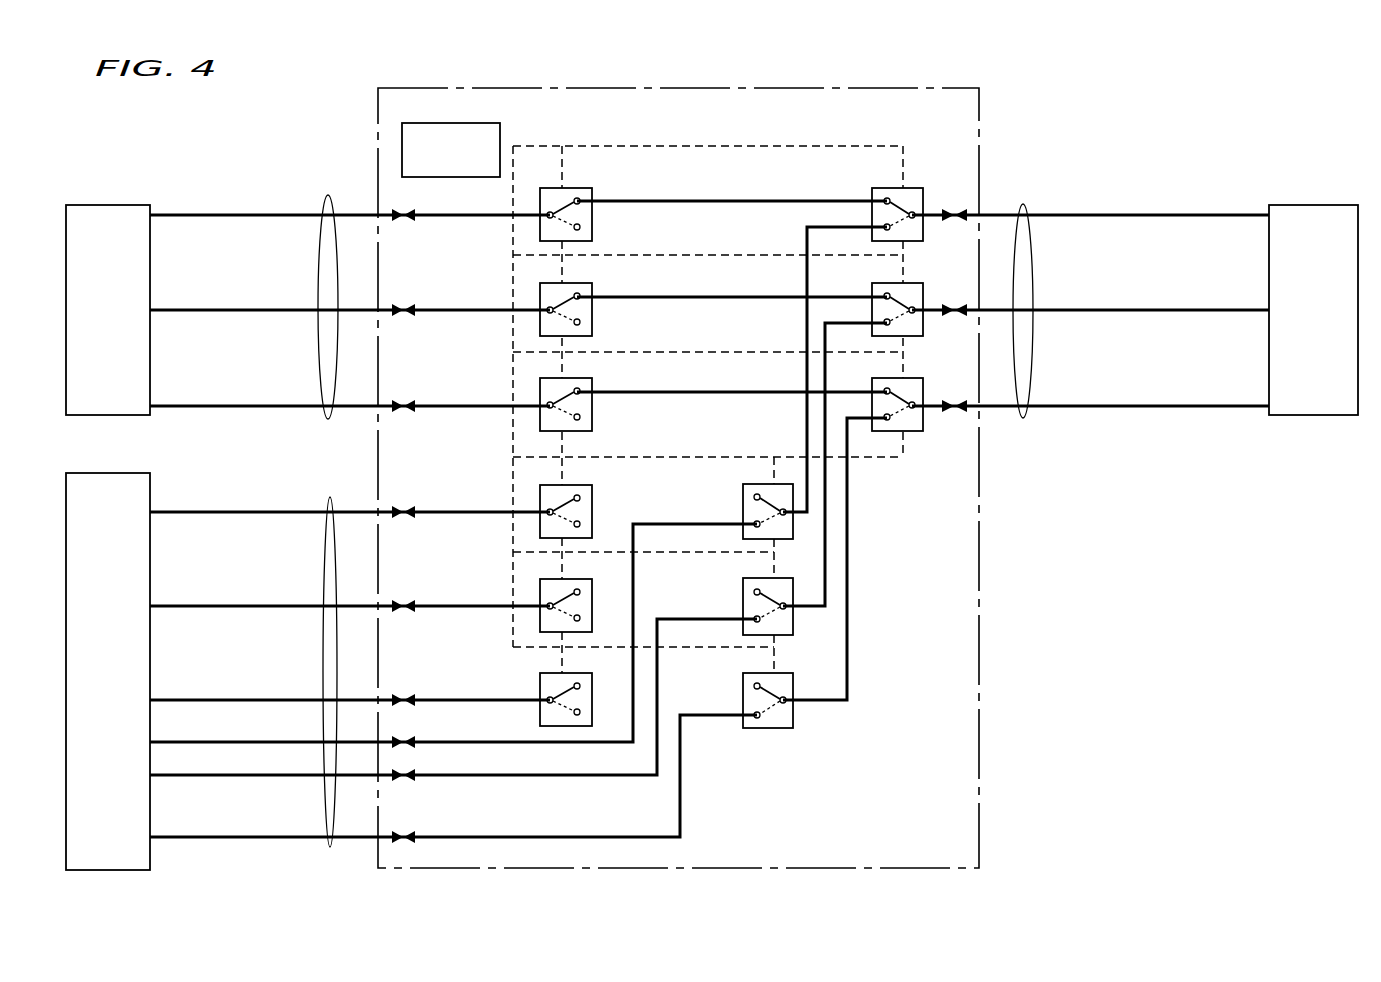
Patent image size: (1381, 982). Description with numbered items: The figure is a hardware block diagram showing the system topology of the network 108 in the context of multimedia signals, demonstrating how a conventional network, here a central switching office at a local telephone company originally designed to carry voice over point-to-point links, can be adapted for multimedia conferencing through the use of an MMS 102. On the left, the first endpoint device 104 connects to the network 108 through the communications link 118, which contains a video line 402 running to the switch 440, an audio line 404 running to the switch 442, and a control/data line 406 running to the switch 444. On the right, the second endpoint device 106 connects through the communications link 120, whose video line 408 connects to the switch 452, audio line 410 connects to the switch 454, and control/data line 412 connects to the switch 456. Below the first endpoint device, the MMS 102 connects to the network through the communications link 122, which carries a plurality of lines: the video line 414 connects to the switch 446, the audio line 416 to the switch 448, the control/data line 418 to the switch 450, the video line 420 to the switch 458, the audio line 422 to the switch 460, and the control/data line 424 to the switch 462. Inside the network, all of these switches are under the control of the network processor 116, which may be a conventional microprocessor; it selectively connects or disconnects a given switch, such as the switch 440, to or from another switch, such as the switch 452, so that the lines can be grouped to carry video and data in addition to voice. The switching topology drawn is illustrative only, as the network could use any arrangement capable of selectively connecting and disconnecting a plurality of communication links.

The MMS 102 is at (74, 473).
The first endpoint device 104 is at (74, 205).
The second endpoint device 106 is at (1301, 205).
The network 108 is at (377, 106).
The network processor 116 is at (435, 177).
The communications link 118 is at (330, 170).
The communications link 120 is at (1023, 204).
The communications link 122 is at (329, 848).
The video line 402 is at (305, 215).
The audio line 404 is at (305, 310).
The control/data line 406 is at (283, 406).
The video line 408 is at (1258, 215).
The audio line 410 is at (1258, 310).
The control/data line 412 is at (1235, 406).
The video line 414 is at (316, 512).
The audio line 416 is at (316, 606).
The control/data line 418 is at (296, 700).
The video line 420 is at (316, 742).
The audio line 422 is at (316, 775).
The control/data line 424 is at (296, 837).
The switch 440 is at (574, 188).
The switch 442 is at (574, 283).
The switch 444 is at (574, 378).
The switch 446 is at (574, 485).
The switch 448 is at (574, 579).
The switch 450 is at (574, 673).
The switch 452 is at (890, 188).
The switch 454 is at (890, 283).
The switch 456 is at (890, 378).
The switch 458 is at (743, 497).
The switch 460 is at (743, 590).
The switch 462 is at (743, 692).